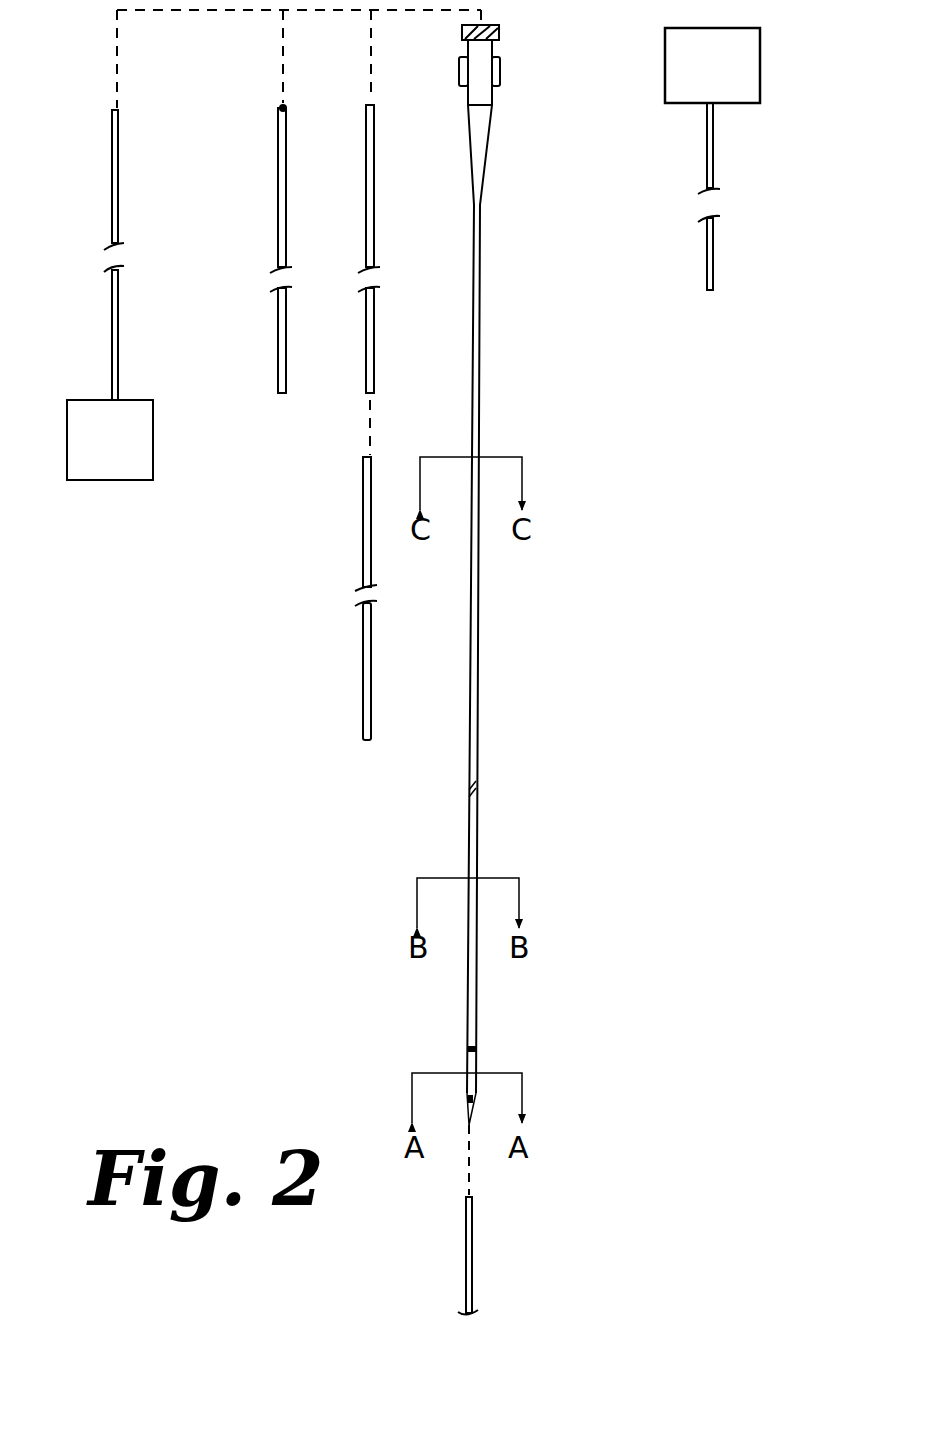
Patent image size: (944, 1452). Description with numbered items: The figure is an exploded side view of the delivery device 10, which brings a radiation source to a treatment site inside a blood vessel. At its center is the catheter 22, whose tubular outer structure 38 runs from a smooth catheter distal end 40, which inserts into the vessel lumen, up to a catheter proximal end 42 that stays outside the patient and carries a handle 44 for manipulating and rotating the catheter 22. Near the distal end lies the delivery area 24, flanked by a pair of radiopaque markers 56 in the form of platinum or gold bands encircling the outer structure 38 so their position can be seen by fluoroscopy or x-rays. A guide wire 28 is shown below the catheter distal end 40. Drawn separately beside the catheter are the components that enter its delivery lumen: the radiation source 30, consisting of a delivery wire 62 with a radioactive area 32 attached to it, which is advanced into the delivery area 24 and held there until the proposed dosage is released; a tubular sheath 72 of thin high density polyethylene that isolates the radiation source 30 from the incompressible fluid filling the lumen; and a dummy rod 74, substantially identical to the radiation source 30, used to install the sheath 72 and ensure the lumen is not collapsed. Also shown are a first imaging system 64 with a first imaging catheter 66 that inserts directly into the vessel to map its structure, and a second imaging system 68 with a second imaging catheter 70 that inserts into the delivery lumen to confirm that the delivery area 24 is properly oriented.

The delivery device 10 is at (503, 613).
The catheter 22 is at (479, 697).
The delivery area 24 is at (477, 1061).
The guide wire 28 is at (473, 1252).
The radiation source 30 is at (275, 236).
The radioactive area 32 is at (282, 115).
The tubular outer structure 38 is at (473, 752).
The catheter distal end 40 is at (470, 1127).
The catheter proximal end 42 is at (499, 32).
The handle 44 is at (500, 70).
The markers 56 is at (467, 1050).
The delivery wire 62 is at (279, 330).
The first imaging system 64 is at (766, 66).
The first imaging catheter 66 is at (713, 152).
The second imaging system 68 is at (96, 484).
The second imaging catheter 70 is at (114, 195).
The sheath 72 is at (374, 322).
The dummy rod 74 is at (362, 540).